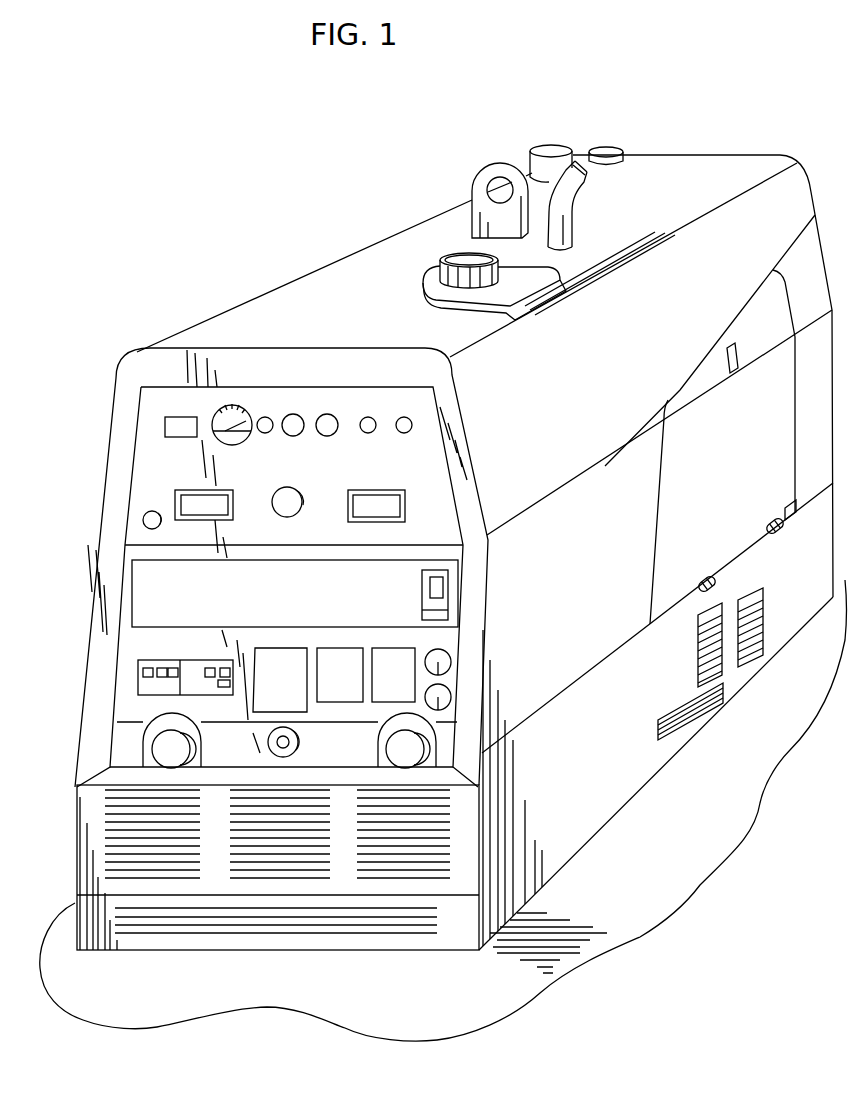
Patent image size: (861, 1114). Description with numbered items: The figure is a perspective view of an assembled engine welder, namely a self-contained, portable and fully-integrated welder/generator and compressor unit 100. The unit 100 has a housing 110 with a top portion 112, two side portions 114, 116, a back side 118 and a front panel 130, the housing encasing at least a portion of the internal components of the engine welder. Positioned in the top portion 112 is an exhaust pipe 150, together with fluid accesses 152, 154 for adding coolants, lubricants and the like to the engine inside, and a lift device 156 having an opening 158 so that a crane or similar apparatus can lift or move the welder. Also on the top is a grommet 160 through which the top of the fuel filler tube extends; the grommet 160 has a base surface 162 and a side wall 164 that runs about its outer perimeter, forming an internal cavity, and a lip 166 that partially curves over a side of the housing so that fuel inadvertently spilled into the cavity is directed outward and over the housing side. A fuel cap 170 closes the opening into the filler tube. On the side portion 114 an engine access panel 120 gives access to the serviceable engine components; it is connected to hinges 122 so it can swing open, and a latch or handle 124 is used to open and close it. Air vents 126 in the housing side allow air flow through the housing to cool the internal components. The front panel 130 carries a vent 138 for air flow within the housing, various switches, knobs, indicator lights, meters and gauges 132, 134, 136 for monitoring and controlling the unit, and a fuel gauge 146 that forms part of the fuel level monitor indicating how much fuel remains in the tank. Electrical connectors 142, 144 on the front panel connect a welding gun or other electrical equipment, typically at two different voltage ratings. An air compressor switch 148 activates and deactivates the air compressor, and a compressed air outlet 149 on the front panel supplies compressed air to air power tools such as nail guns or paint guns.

The welder/generator and compressor unit 100 is at (262, 237).
The housing 110 is at (730, 155).
The top portion 112 is at (663, 190).
The side portion 114 is at (625, 783).
The side portion 116 is at (112, 395).
The back side 118 is at (815, 215).
The engine access panel 120 is at (683, 489).
The hinges 122 is at (767, 535).
The latch or handle 124 is at (728, 362).
The air vents 126 is at (710, 683).
The front panel 130 is at (152, 445).
The switches, knobs, indicator lights, meters and gauges 132 is at (147, 515).
The switches, knobs, indicator lights, meters and gauges 134 is at (364, 418).
The switches, knobs, indicator lights, meters and gauges 136 is at (190, 665).
The vent 138 is at (435, 832).
The electrical connector 142 is at (171, 748).
The electrical connector 144 is at (405, 750).
The fuel gauge 146 is at (218, 413).
The air compressor switch 148 is at (438, 585).
The compressed air outlet 149 is at (283, 738).
The exhaust pipe 150 is at (553, 222).
The fluid access 152 is at (612, 148).
The fluid access 154 is at (548, 147).
The lift device 156 is at (485, 170).
The opening 158 is at (488, 192).
The grommet 160 is at (423, 277).
The base surface 162 is at (508, 293).
The side wall 164 is at (605, 264).
The lip 166 is at (580, 290).
The fuel cap 170 is at (443, 266).